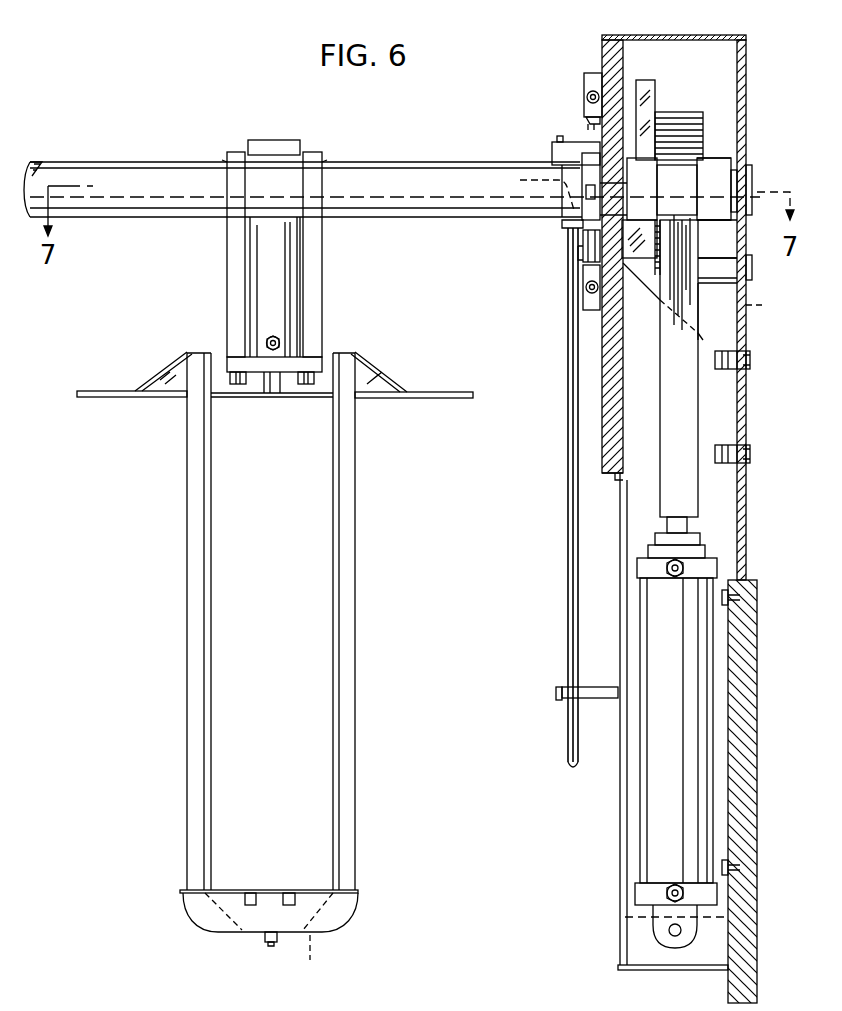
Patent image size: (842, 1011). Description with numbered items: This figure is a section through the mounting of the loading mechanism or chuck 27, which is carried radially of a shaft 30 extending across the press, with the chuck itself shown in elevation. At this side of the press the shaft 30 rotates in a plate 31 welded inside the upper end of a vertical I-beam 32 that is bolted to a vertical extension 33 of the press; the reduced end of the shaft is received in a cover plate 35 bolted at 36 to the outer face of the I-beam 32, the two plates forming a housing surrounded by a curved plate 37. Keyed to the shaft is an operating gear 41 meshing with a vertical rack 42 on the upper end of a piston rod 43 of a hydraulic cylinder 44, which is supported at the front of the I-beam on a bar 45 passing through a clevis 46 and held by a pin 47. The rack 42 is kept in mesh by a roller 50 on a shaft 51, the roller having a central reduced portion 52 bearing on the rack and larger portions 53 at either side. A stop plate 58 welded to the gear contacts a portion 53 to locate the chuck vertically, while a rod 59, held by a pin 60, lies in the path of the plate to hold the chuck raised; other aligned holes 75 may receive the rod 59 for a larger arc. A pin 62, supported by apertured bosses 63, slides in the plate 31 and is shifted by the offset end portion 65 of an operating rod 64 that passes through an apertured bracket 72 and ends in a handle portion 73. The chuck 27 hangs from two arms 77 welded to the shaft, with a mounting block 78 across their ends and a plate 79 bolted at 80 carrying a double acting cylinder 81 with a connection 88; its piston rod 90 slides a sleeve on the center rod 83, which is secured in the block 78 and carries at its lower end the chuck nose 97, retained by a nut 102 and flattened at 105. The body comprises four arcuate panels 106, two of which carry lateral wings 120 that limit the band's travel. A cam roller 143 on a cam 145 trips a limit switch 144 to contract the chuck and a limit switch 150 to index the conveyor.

The chuck 27 is at (384, 654).
The shaft 30 is at (455, 165).
The plate 31 is at (603, 426).
The vertical I-beam 32 is at (620, 806).
The vertical extension 33 is at (750, 756).
The cover plate 35 is at (737, 342).
The bolts 36 is at (752, 360).
The curved plate 37 is at (690, 37).
The operating gear 41 is at (683, 115).
The vertical rack 42 is at (690, 488).
The piston rod 43 is at (680, 526).
The hydraulic cylinder 44 is at (700, 656).
The bar 45 is at (630, 926).
The clevis 46 is at (660, 926).
The pin 47 is at (675, 936).
The roller 50 is at (717, 163).
The shaft 51 is at (745, 185).
The central reduced portion 52 is at (683, 172).
The larger portions 53 is at (630, 165).
The stop plate 58 is at (645, 90).
The rod 59 is at (748, 267).
The pin 60 is at (614, 262).
The pin 62 is at (552, 150).
The apertured bosses 63 is at (600, 128).
The operating rod 64 is at (570, 576).
The offset end portion 65 is at (534, 189).
The apertured bracket 72 is at (593, 699).
The handle portion 73 is at (568, 763).
The aligned holes 75 is at (767, 305).
The arms 77 is at (230, 300).
The mounting block 78 is at (300, 314).
The plate 79 is at (307, 364).
The bolts 80 is at (232, 384).
The double acting cylinder 81 is at (257, 254).
The center rod 83 is at (262, 375).
The lower connection 88 is at (280, 340).
The piston rod 90 is at (272, 384).
The chuck nose 97 is at (200, 937).
The nut 102 is at (265, 937).
The flattened portion 105 is at (269, 940).
The arcuate panels 106 is at (187, 594).
The lateral wings 120 is at (118, 391).
The cam roller 143 is at (590, 238).
The limit switch 144 is at (586, 307).
The cam 145 is at (585, 262).
The limit switch 150 is at (587, 77).